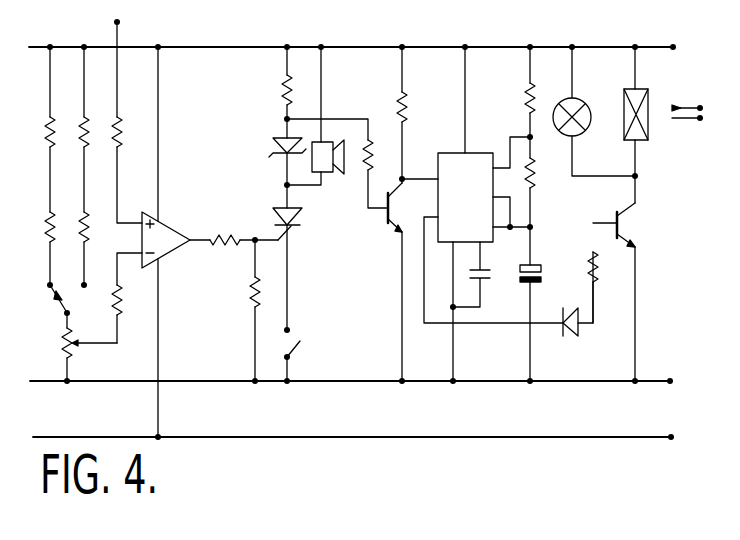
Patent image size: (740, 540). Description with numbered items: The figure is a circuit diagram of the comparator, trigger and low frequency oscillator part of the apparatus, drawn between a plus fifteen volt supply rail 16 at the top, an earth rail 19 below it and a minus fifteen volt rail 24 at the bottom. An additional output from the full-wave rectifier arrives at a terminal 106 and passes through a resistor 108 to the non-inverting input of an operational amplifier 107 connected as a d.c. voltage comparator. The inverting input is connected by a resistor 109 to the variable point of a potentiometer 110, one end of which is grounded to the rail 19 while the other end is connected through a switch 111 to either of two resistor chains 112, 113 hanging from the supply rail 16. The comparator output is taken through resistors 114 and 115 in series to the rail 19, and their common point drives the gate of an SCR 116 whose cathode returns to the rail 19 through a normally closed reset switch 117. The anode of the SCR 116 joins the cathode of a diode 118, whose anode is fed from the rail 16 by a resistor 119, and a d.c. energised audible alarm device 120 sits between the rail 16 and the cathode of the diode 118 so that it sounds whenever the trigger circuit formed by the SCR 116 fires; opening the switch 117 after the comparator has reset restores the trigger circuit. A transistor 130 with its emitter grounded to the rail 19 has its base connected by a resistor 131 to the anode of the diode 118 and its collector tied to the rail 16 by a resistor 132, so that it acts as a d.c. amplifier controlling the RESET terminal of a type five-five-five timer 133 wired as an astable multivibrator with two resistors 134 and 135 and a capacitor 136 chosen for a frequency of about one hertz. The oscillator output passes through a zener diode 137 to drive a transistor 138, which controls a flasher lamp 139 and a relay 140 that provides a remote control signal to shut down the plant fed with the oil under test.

The supply rail 16 is at (432, 47).
The earth rail 19 is at (367, 382).
The negative supply rail 24 is at (453, 438).
The terminal 106 is at (117, 22).
The operational amplifier 107 is at (177, 220).
The resistor 108 is at (122, 128).
The resistor 109 is at (122, 302).
The potentiometer 110 is at (63, 342).
The switch 111 is at (62, 304).
The resistor chain 112 is at (50, 196).
The resistor chain 113 is at (84, 206).
The resistor 114 is at (222, 245).
The resistor 115 is at (252, 290).
The SCR 116 is at (302, 217).
The reset switch 117 is at (302, 350).
The diode 118 is at (272, 145).
The resistor 119 is at (280, 80).
The audible alarm device 120 is at (323, 172).
The transistor 130 is at (385, 220).
The resistor 131 is at (383, 137).
The resistor 132 is at (408, 105).
The timer integrated circuit 133 is at (437, 180).
The resistor 134 is at (523, 87).
The resistor 135 is at (538, 175).
The capacitor 136 is at (545, 275).
The zener diode 137 is at (578, 330).
The transistor 138 is at (638, 222).
The flasher lamp 139 is at (588, 129).
The relay 140 is at (623, 112).